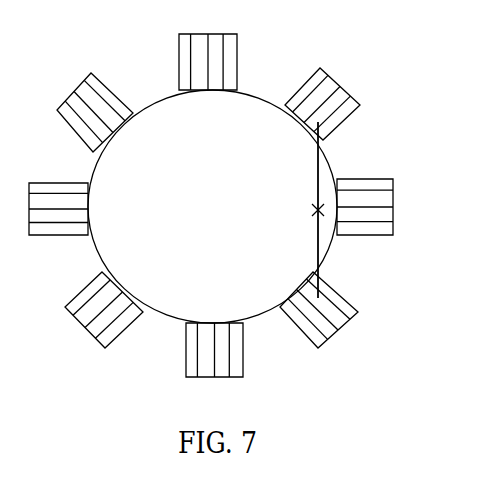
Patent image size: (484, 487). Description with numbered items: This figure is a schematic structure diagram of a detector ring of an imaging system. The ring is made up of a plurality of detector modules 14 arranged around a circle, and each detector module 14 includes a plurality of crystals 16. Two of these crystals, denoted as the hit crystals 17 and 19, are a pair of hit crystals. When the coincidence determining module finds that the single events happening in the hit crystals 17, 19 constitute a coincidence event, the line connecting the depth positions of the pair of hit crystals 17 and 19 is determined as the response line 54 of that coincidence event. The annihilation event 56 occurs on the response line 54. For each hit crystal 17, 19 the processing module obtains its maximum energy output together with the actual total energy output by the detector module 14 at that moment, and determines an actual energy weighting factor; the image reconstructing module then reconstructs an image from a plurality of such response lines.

The detector module 14 is at (303, 70).
The crystal 16 is at (338, 80).
The hit crystal 17 is at (340, 88).
The hit crystal 19 is at (342, 322).
The response line 54 is at (317, 173).
The annihilation event 56 is at (314, 208).